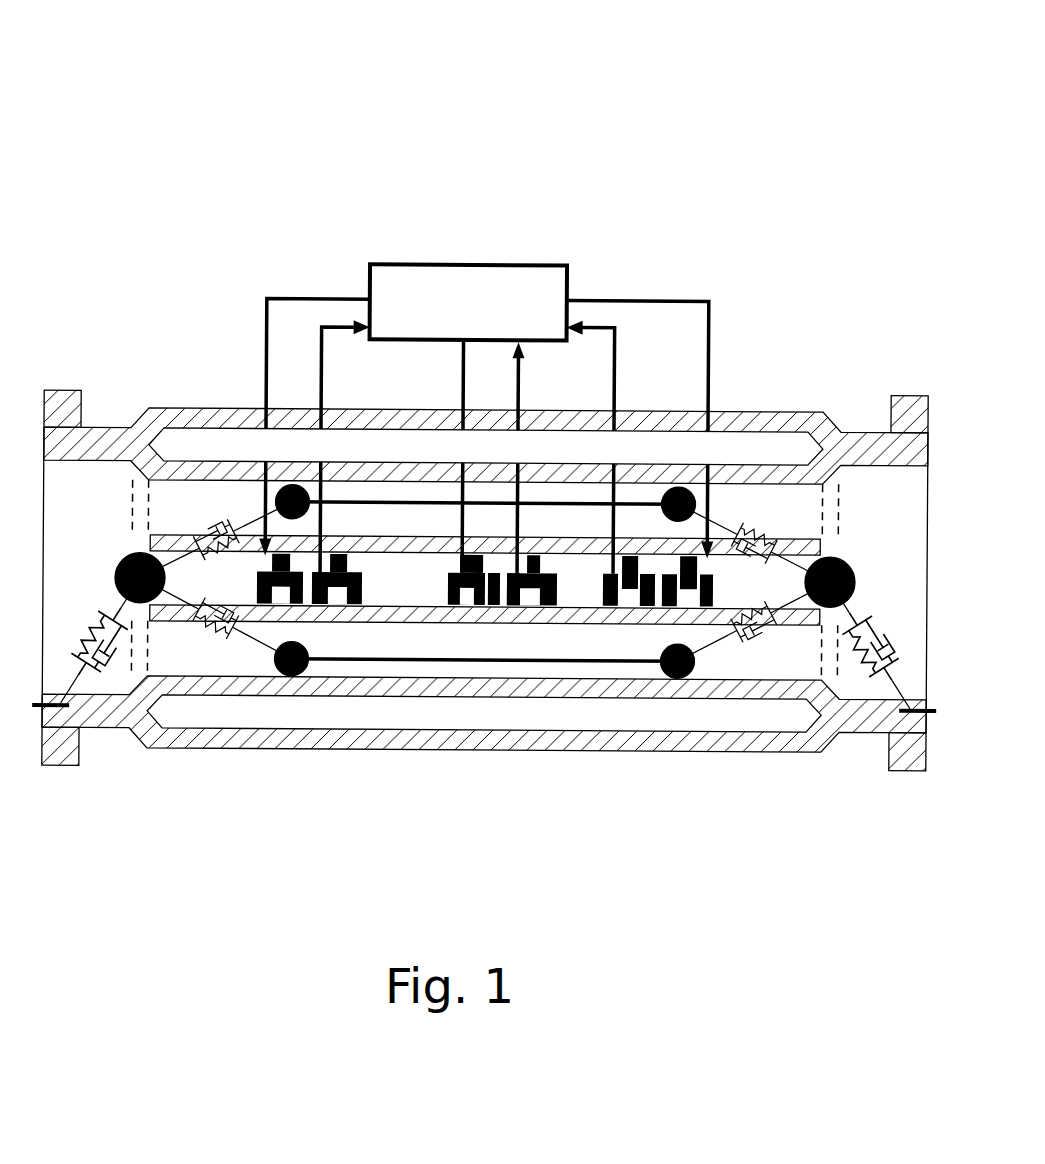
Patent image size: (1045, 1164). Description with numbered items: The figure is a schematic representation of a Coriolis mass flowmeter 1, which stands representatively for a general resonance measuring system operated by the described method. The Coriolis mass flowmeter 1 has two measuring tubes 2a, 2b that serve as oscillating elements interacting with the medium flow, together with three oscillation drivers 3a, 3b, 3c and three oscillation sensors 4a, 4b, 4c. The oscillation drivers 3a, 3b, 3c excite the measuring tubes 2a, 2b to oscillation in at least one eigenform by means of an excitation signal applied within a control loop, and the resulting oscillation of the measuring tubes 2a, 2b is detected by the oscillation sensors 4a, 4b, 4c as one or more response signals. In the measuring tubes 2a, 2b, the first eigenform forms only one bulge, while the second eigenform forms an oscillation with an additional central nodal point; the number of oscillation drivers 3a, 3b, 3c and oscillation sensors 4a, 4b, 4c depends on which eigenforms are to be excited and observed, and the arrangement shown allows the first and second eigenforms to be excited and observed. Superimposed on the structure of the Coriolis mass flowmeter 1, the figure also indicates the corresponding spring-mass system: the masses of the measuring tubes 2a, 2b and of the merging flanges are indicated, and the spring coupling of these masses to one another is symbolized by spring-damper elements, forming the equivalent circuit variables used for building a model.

The Coriolis mass flowmeter 1 is at (190, 215).
The measuring tube 2a is at (629, 557).
The measuring tube 2b is at (572, 613).
The oscillation driver 3a is at (250, 640).
The oscillation driver 3b is at (713, 612).
The oscillation driver 3c is at (453, 612).
The oscillation sensor 4a is at (350, 612).
The oscillation sensor 4b is at (640, 612).
The oscillation sensor 4c is at (507, 612).